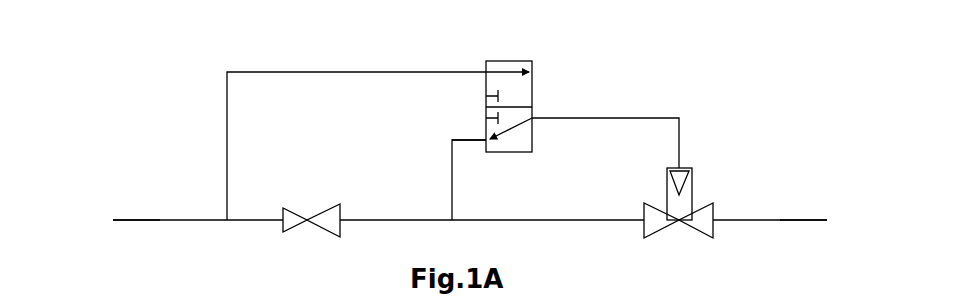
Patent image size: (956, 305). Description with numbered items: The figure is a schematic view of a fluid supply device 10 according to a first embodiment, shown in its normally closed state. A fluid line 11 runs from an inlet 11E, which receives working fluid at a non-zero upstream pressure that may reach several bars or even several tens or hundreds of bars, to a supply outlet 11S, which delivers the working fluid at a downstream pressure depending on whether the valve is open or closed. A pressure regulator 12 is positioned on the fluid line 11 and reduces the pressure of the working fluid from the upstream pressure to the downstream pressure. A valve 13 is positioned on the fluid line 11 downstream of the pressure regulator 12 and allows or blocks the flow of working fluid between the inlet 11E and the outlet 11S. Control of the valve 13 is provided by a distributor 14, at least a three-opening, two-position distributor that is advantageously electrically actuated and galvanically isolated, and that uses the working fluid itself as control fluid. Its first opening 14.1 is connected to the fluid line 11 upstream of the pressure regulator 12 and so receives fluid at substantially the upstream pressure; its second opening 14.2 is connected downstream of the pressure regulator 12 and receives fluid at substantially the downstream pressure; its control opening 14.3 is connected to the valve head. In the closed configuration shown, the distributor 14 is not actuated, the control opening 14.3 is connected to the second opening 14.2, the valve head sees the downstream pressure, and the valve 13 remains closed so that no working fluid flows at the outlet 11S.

The fluid supply device 10 is at (98, 72).
The fluid line 11 is at (557, 228).
The inlet 11E is at (121, 229).
The supply outlet 11S is at (825, 233).
The pressure regulator 12 is at (297, 234).
The valve 13 is at (681, 240).
The distributor 14 is at (532, 52).
The first opening 14.1 is at (485, 63).
The second opening 14.2 is at (464, 130).
The control opening 14.3 is at (605, 132).